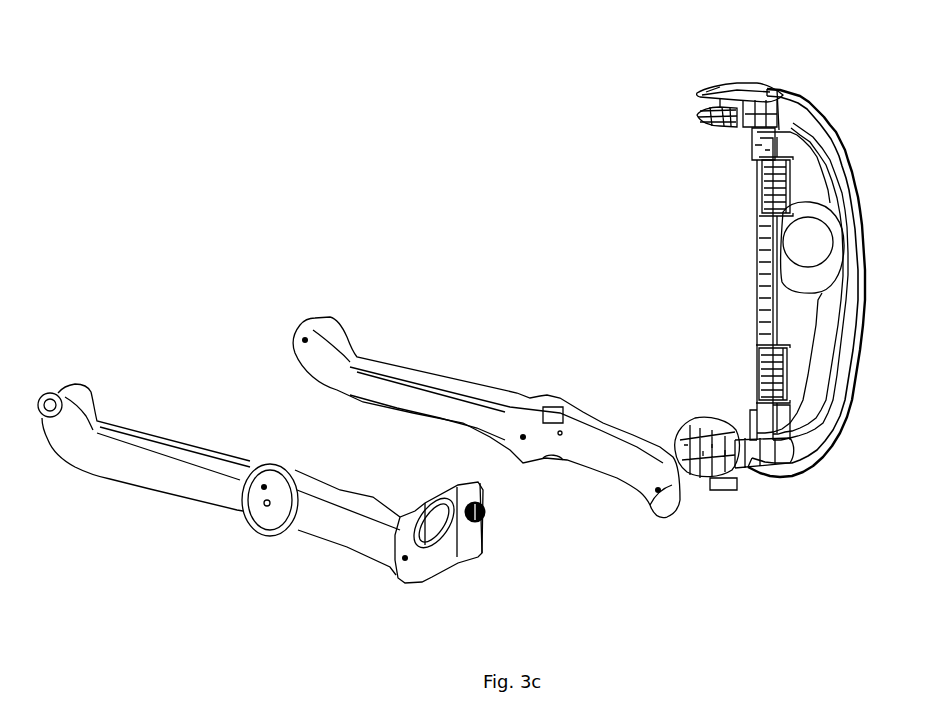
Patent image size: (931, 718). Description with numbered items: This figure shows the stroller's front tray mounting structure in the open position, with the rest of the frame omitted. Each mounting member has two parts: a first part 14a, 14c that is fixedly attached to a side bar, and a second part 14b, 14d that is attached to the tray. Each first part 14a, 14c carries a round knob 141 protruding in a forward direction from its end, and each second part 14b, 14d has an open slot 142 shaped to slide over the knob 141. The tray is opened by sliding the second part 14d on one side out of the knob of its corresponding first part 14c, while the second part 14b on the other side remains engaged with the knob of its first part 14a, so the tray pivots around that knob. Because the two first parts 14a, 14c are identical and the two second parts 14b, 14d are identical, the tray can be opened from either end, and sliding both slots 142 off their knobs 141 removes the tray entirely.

The second part 14d is at (738, 85).
The open slot 142 is at (702, 117).
The second part 14b is at (723, 422).
The first part 14a is at (695, 490).
The first part 14c is at (440, 555).
The round knob 141 is at (487, 520).